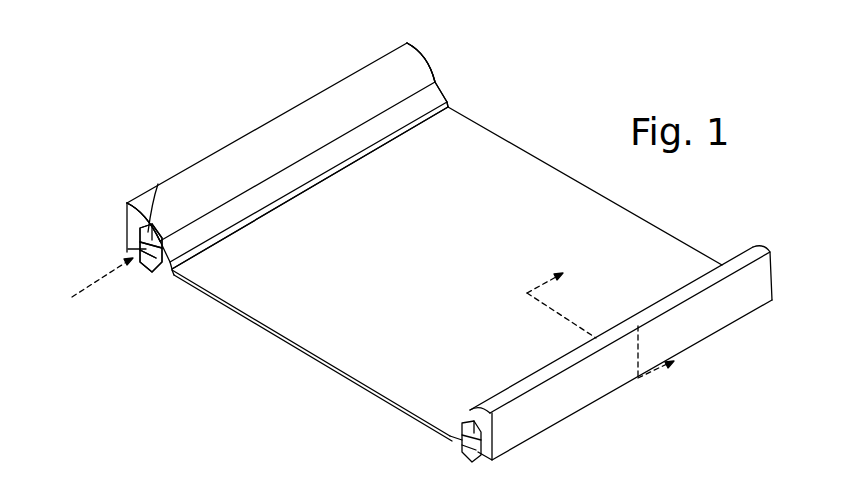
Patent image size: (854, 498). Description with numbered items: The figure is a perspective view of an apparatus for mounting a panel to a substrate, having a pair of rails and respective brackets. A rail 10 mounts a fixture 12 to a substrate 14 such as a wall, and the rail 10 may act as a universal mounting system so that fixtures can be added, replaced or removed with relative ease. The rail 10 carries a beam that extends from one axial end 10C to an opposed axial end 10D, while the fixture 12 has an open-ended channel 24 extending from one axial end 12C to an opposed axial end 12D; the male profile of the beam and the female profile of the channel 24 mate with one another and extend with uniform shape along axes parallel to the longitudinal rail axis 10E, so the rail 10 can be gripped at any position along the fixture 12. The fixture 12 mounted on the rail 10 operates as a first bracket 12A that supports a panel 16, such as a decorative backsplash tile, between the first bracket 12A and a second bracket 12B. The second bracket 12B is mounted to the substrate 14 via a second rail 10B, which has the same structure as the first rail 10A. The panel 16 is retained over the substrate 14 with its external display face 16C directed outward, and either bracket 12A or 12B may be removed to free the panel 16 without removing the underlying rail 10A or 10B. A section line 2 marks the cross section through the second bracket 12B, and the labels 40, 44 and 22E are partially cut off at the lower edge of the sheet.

The section line 2 is at (612, 318).
The rail 10 is at (133, 264).
The first rail 10A is at (151, 248).
The second rail 10B is at (462, 455).
The axial end of rail 10C is at (110, 223).
The opposed axial end of rail 10D is at (432, 62).
The longitudinal rail axis 10E is at (98, 279).
The fixture 12 is at (173, 178).
The first bracket 12A is at (158, 184).
The second bracket 12B is at (768, 252).
The axial end of fixture 12C is at (100, 230).
The opposed axial end of fixture 12D is at (453, 73).
The substrate 14 is at (277, 399).
The panel 16 is at (473, 208).
The external display face 16C is at (360, 269).
The channel 24 is at (146, 249).
The component 40 is at (751, 494).
The component 44 is at (694, 486).
The component 22E is at (644, 494).